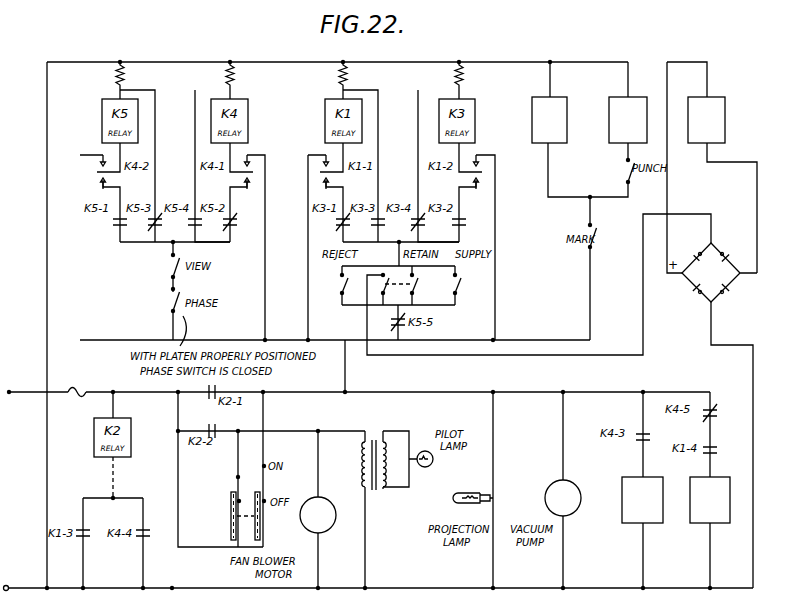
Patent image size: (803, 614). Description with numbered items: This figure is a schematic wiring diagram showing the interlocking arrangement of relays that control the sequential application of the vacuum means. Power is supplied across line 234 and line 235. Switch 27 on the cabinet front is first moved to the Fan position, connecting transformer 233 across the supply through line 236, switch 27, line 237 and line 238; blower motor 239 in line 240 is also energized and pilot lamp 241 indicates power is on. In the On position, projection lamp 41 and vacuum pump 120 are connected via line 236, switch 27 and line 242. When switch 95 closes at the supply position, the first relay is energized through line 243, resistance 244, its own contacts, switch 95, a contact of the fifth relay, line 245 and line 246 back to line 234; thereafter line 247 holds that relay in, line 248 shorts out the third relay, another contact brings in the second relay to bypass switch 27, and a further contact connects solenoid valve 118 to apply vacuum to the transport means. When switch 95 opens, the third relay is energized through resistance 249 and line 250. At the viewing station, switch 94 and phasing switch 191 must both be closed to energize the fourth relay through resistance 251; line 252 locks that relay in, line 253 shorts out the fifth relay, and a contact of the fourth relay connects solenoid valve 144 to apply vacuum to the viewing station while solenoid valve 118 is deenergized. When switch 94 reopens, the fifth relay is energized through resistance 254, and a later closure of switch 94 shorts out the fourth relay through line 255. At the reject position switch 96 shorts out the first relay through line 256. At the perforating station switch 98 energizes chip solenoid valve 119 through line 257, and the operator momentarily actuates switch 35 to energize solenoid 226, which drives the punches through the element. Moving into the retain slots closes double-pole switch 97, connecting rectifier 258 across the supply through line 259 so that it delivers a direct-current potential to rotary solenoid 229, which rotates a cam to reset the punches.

The resistance 254 is at (117, 76).
The line 253 is at (143, 86).
The resistance 251 is at (236, 78).
The line 255 is at (195, 113).
The line 252 is at (265, 193).
The resistance 244 is at (340, 76).
The line 248 is at (418, 90).
The resistance 249 is at (463, 76).
The line 256 is at (379, 163).
The line 247 is at (307, 266).
The line 250 is at (496, 235).
The chip solenoid valve 119 is at (531, 108).
The solenoid 226 is at (612, 97).
The rotary solenoid 229 is at (725, 100).
The line 257 is at (549, 168).
The switch 35 is at (628, 169).
The switch 98 is at (596, 244).
The rectifier 258 is at (722, 297).
The line 245 is at (517, 340).
The line 259 is at (522, 356).
The line 243 is at (47, 343).
The line 234 is at (135, 391).
The line 246 is at (346, 376).
The line 236 is at (178, 484).
The line 237 is at (238, 465).
The switch 27 is at (231, 506).
The line 242 is at (264, 412).
The line 238 is at (305, 431).
The line 240 is at (319, 463).
The transformer 233 is at (376, 440).
The blower motor 239 is at (312, 523).
The pilot lamp 241 is at (433, 461).
The projection lamp 41 is at (452, 503).
The vacuum pump 120 is at (556, 490).
The solenoid valve 144 is at (622, 523).
The solenoid valve 118 is at (697, 523).
The line 235 is at (412, 590).
The switch 94 is at (171, 262).
The phasing switch 191 is at (171, 300).
The switch 96 is at (340, 289).
The double-pole switch 97 is at (415, 290).
The switch 95 is at (461, 290).